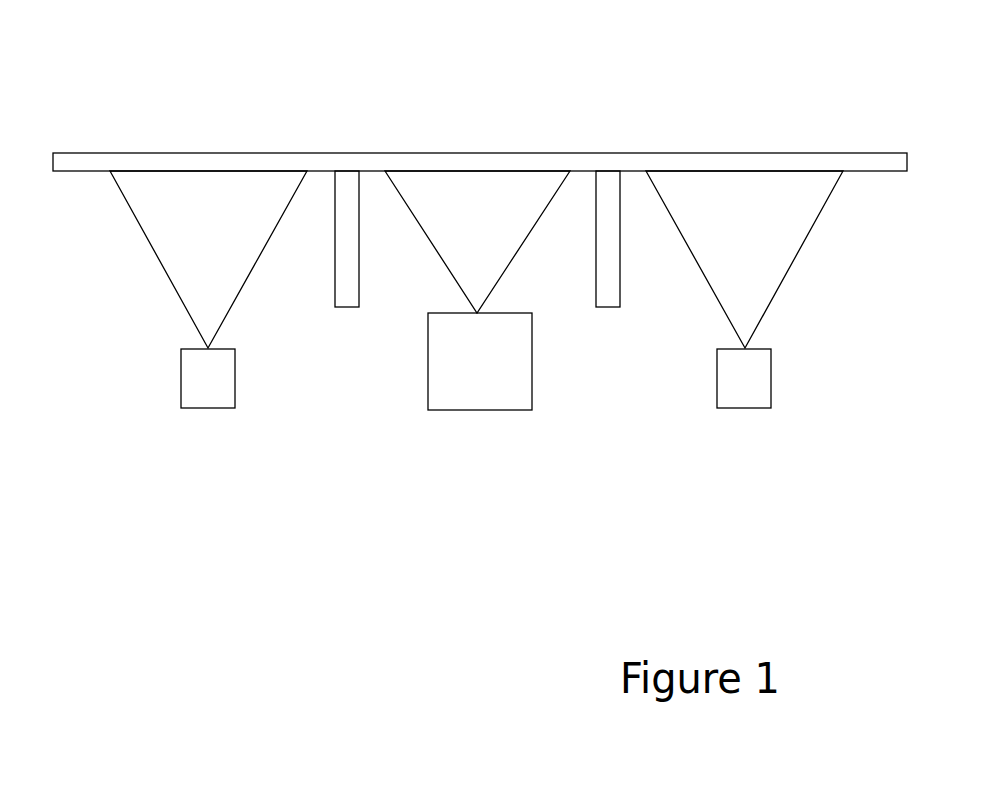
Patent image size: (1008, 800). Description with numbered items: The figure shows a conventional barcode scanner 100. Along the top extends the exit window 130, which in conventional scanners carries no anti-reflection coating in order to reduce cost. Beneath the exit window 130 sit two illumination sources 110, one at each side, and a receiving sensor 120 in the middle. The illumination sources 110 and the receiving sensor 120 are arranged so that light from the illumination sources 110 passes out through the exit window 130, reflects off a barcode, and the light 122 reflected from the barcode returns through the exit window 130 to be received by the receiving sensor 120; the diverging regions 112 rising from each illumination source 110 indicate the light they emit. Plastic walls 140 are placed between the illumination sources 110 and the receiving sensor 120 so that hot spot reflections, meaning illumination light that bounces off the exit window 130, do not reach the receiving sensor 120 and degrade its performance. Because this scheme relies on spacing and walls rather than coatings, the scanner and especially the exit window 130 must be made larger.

The conventional barcode scanner 100 is at (747, 63).
The illumination sources 110 is at (214, 410).
The tapered (conical) sidewall 112 is at (150, 253).
The receiving sensor 120 is at (488, 412).
The light reflected from the barcode 122 is at (435, 250).
The exit window 130 is at (69, 172).
The plastic walls 140 is at (345, 310).